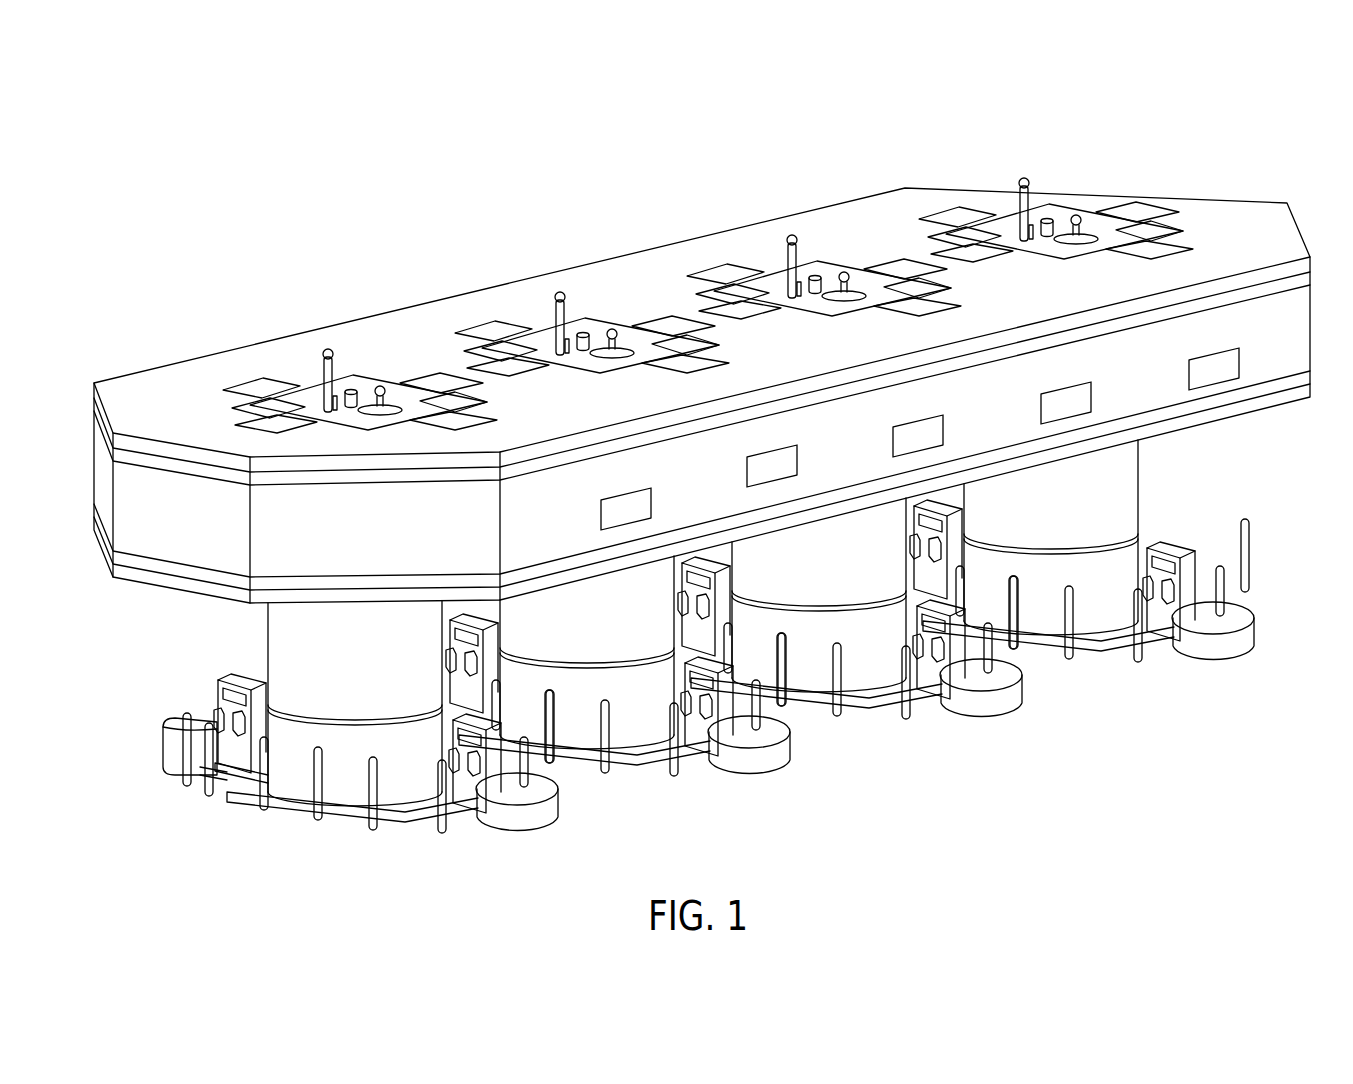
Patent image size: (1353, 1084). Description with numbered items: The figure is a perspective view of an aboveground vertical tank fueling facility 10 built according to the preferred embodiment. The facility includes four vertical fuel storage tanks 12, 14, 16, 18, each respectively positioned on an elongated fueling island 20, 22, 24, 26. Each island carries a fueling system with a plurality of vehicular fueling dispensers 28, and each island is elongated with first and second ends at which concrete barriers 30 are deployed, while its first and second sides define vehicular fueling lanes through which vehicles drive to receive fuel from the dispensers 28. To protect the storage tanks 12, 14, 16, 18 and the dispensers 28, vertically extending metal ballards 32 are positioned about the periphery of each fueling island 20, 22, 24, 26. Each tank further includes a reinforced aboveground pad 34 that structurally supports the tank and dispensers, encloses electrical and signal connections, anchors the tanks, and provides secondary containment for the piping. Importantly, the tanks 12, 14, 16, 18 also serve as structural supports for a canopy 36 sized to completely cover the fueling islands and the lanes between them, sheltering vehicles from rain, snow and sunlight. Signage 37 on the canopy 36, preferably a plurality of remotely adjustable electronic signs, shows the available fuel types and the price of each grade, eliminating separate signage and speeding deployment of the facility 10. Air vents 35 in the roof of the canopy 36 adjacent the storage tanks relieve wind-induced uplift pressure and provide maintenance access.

The aboveground vertical tank fueling facility 10 is at (567, 216).
The vertical fuel storage tank 12 is at (370, 713).
The vertical fuel storage tank 14 is at (601, 655).
The vertical fuel storage tank 16 is at (831, 599).
The vertical fuel storage tank 18 is at (1064, 539).
The elongated fueling island 20 is at (278, 820).
The elongated fueling island 22 is at (643, 775).
The elongated fueling island 24 is at (874, 718).
The elongated fueling island 26 is at (1104, 663).
The vehicular fueling dispenser 28 is at (218, 688).
The concrete barrier 30 is at (522, 826).
The metal ballard 32 is at (200, 796).
The reinforced aboveground pad 34 is at (340, 827).
The air vent 35 is at (428, 382).
The canopy 36 is at (825, 213).
The signage 37 is at (1143, 402).